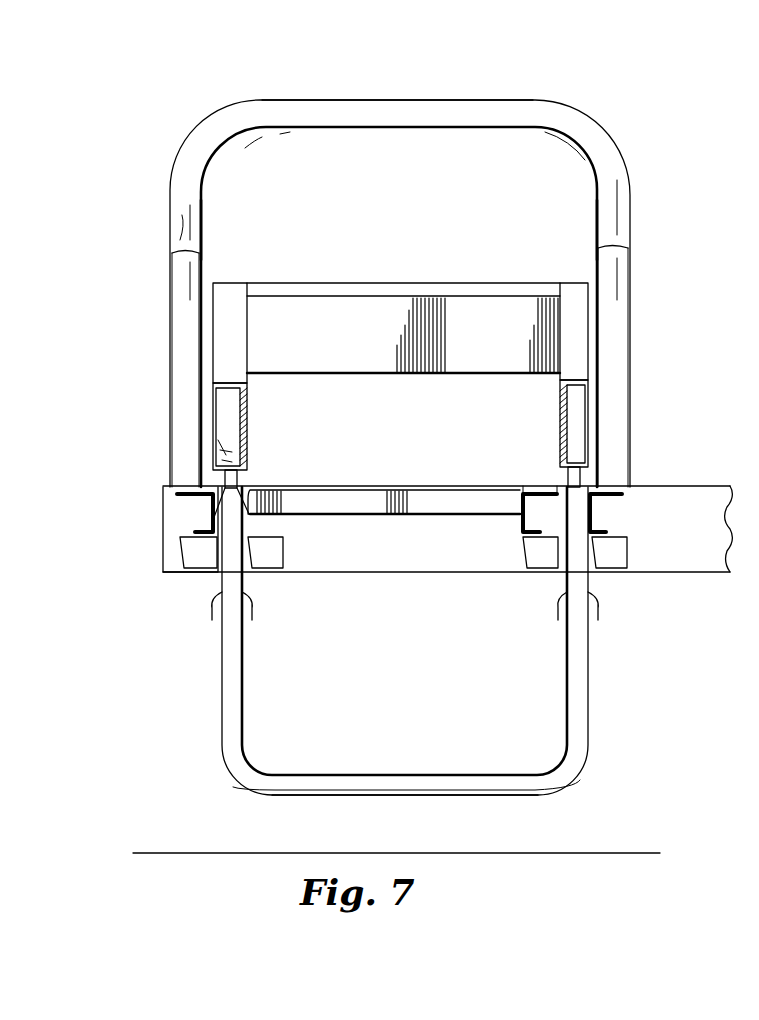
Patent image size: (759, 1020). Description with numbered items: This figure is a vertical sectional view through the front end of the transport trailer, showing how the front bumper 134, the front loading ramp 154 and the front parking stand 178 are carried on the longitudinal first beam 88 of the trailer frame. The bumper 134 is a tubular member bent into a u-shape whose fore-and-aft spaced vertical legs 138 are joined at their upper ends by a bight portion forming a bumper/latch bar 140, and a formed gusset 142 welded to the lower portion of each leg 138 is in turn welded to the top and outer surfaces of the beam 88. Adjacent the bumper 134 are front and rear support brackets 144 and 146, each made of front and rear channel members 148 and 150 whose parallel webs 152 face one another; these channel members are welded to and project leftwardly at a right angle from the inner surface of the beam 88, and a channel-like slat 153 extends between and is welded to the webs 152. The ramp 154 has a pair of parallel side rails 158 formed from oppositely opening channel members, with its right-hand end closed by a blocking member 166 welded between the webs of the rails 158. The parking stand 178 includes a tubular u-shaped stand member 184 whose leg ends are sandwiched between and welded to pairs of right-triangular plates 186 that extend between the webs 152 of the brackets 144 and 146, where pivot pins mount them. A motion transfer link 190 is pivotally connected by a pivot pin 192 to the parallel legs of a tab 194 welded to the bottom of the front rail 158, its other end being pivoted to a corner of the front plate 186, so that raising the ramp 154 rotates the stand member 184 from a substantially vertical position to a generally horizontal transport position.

The longitudinal first beam 88 is at (716, 485).
The front bumper 134 is at (620, 140).
The vertical legs 138 is at (201, 224).
The bumper/latch bar 140 is at (388, 99).
The formed gusset 142 is at (178, 302).
The front support bracket 144 is at (190, 531).
The rear support bracket 146 is at (523, 533).
The front channel member 148 is at (190, 570).
The rear channel member 150 is at (270, 575).
The webs 152 is at (248, 492).
The channel-like slat 153 is at (415, 516).
The front loading ramp 154 is at (445, 268).
The side rails 158 is at (232, 292).
The blocking member 166 is at (398, 375).
The front parking stand 178 is at (590, 666).
The stand member 184 is at (418, 775).
The right-triangular plates 186 is at (243, 605).
The motion transfer link 190 is at (225, 485).
The pivot pin 192 is at (225, 425).
The tab 194 is at (232, 492).